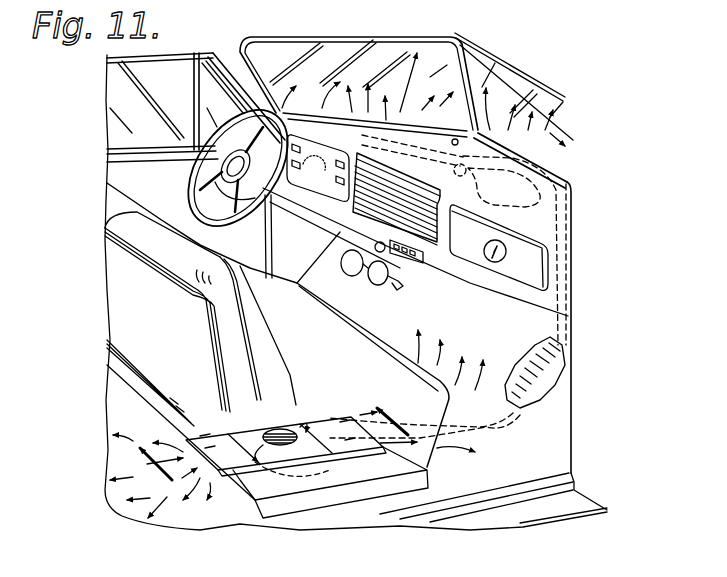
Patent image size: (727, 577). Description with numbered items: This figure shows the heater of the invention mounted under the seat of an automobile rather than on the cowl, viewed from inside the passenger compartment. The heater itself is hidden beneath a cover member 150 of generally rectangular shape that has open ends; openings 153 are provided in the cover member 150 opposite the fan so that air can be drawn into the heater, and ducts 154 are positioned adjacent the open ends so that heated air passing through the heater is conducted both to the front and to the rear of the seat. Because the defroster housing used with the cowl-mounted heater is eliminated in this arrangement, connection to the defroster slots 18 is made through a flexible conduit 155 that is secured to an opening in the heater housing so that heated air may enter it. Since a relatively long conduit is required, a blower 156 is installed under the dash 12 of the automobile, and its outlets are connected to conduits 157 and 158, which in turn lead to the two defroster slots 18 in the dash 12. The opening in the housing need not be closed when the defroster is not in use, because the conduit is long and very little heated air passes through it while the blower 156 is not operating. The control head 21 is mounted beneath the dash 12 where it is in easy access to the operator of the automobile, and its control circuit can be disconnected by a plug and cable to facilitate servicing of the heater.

The dash 12 is at (600, 212).
The defroster slots 18 is at (596, 154).
The control head 21 is at (423, 263).
The cover member 150 is at (297, 417).
The openings 153 is at (277, 432).
The ducts 154 is at (207, 443).
The flexible conduit 155 is at (537, 383).
The blower 156 is at (452, 169).
The conduit 157 is at (514, 250).
The conduit 158 is at (372, 139).